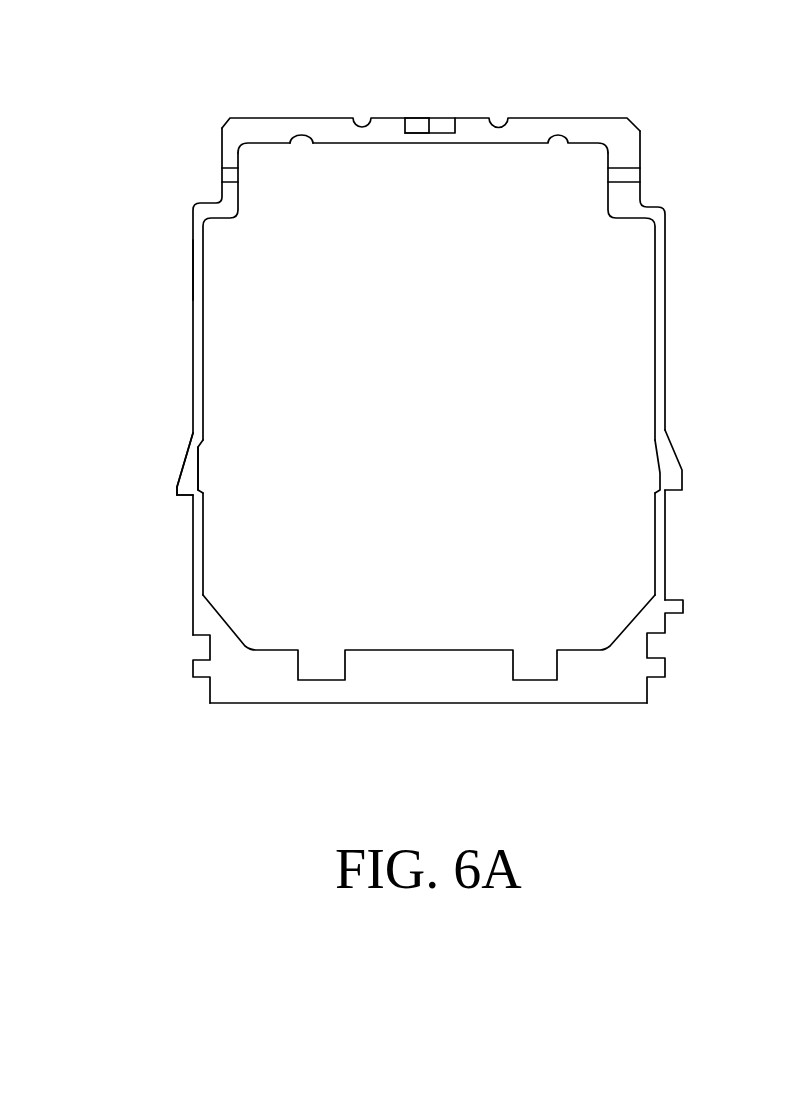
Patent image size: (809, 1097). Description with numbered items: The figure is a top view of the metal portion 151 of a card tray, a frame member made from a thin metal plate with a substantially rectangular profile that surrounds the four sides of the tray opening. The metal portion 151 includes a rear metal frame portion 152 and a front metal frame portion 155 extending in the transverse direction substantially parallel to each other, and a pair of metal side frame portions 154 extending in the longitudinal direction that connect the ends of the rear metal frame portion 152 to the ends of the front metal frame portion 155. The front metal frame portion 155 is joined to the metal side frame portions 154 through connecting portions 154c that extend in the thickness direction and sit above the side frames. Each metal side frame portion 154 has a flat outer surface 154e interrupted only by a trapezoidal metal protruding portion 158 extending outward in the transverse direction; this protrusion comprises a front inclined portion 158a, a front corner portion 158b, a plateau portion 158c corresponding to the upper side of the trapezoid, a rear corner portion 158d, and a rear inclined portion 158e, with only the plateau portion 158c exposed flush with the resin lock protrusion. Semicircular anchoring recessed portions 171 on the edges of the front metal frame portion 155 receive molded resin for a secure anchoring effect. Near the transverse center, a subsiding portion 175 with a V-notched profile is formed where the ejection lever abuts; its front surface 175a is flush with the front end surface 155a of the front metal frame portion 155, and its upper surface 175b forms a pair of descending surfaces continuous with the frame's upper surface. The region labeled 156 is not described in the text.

The metal portion 151 is at (215, 704).
The rear metal frame portion 152 is at (380, 683).
The metal side frame portion 154 is at (666, 342).
The connecting portion 154c is at (641, 175).
The outer surface 154e is at (192, 270).
The front metal frame portion 155 is at (530, 140).
The front end surface 155a is at (577, 117).
The inner bottom surface 156 is at (468, 632).
The metal protruding portion 158 is at (684, 472).
The front inclined portion 158a is at (187, 450).
The front corner portion 158b is at (176, 473).
The plateau portion 158c is at (176, 483).
The rear corner portion 158d is at (174, 493).
The rear inclined portion 158e is at (174, 500).
The anchoring recessed portion 171 is at (300, 145).
The subsiding portion 175 is at (446, 117).
The front surface 175a is at (416, 117).
The upper surface 175b is at (416, 134).